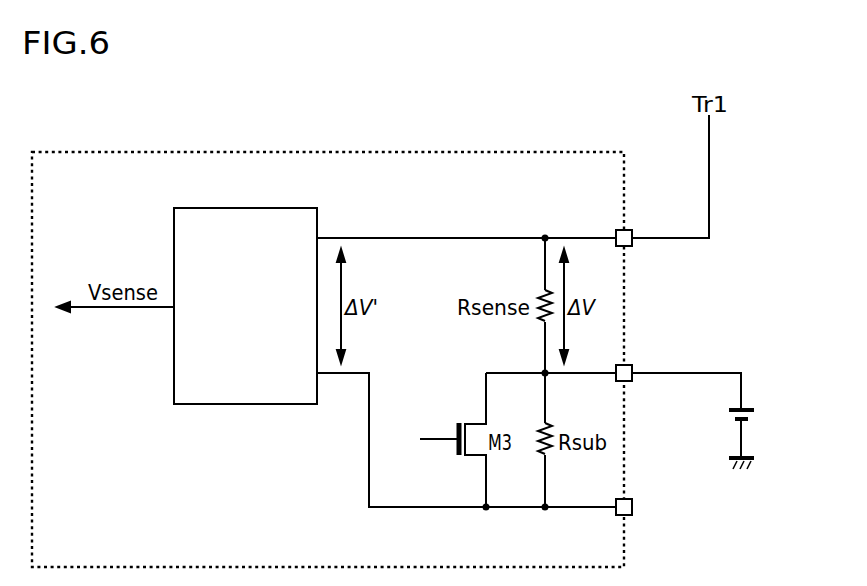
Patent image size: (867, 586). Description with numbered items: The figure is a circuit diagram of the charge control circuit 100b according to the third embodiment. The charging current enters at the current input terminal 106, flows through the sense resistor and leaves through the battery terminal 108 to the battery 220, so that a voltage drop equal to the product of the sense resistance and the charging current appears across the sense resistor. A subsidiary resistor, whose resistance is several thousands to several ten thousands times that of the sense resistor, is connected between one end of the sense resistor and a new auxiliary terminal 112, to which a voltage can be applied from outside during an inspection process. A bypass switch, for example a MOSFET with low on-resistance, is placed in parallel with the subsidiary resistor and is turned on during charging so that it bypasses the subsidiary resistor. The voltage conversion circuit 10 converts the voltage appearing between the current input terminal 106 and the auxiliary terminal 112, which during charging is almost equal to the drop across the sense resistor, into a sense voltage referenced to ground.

The charge control circuit 100b is at (330, 152).
The voltage conversion circuit 10 is at (237, 208).
The current input terminal 106 is at (633, 230).
The battery terminal 108 is at (633, 365).
The auxiliary terminal 112 is at (633, 499).
The battery 220 is at (752, 419).